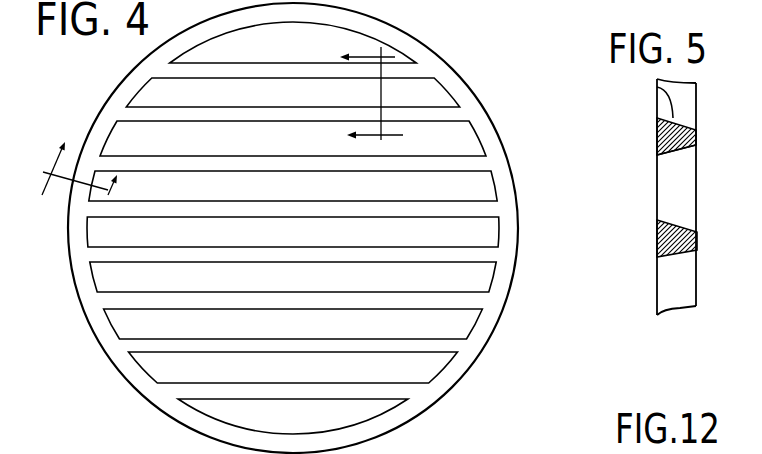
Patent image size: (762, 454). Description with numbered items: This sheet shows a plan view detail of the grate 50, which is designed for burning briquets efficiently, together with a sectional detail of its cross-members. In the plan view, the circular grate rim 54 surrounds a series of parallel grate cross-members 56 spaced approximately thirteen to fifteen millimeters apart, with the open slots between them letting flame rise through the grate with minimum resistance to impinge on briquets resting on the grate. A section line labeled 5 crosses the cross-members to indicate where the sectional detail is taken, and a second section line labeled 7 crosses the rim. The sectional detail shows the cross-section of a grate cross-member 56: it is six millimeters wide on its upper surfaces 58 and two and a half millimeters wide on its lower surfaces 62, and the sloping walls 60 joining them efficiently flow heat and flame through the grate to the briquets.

In FIG. 4, the grate 50 is at (301, 228).
In FIG. 4, the grate rim 54 is at (495, 158).
In FIG. 4, the grate cross-members 56 is at (432, 207).
In FIG. 5, the grate cross-members 56 is at (697, 134).
In FIG. 5, the upper surfaces 58 is at (657, 138).
In FIG. 5, the sloping walls 60 is at (657, 91).
In FIG. 5, the lower surfaces 62 is at (697, 144).
In FIG. 4, the section line 5- 5 is at (364, 87).
In FIG. 4, the section line 7- 7 is at (85, 179).